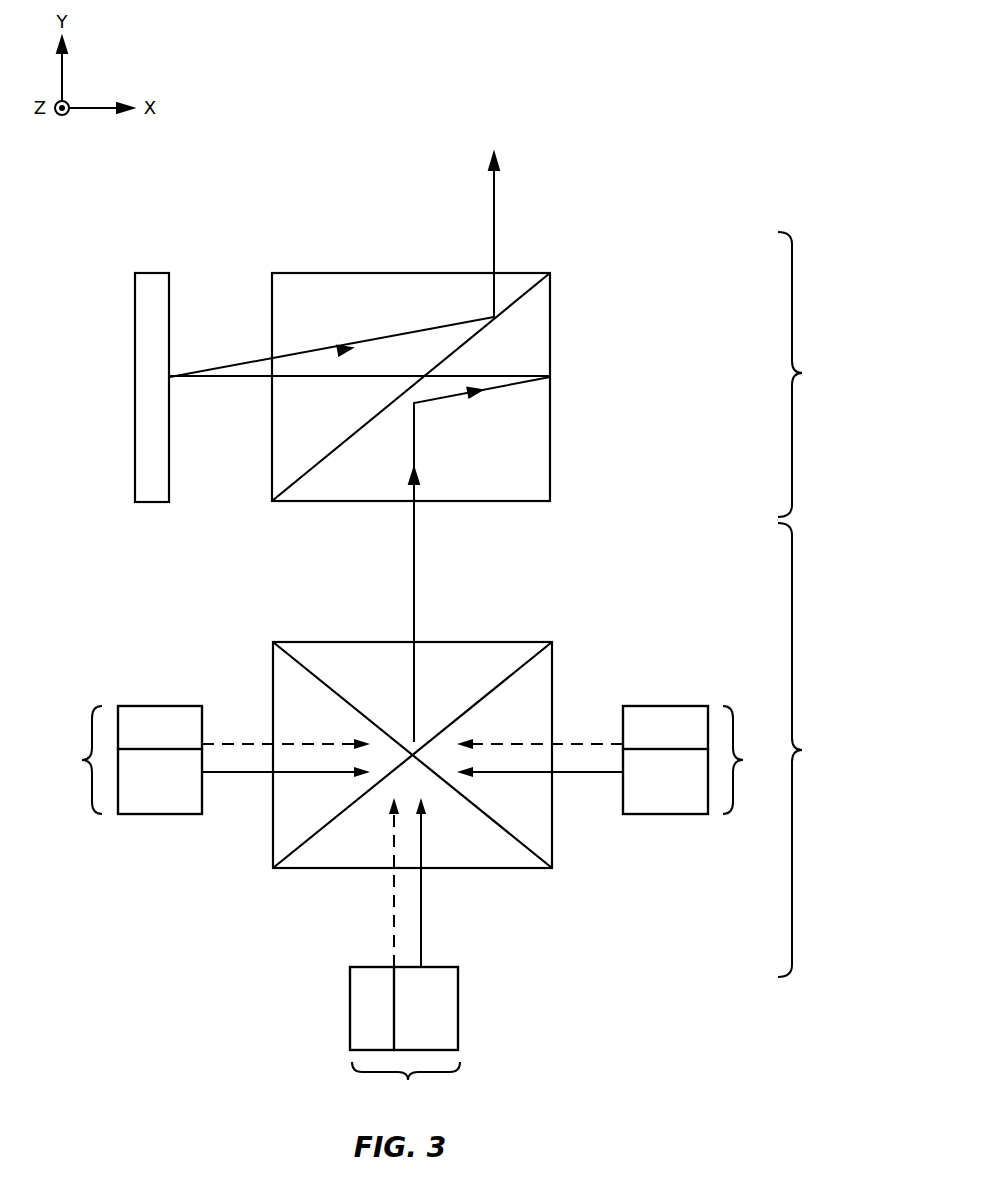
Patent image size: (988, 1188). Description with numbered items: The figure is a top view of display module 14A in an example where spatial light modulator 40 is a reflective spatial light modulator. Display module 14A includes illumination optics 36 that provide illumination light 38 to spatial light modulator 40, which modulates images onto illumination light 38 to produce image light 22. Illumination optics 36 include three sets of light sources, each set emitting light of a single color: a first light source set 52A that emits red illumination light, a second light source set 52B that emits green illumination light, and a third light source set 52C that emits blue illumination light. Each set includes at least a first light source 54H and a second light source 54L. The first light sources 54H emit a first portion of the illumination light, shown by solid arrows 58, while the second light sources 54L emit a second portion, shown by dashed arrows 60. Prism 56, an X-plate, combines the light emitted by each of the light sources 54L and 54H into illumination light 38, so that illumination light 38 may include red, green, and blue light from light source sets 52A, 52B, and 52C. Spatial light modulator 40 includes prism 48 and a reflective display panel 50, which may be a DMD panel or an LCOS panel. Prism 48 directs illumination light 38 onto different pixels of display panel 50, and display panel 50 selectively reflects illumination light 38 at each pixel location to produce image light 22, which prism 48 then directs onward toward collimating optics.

The display module 14A is at (677, 100).
The image light 22 is at (494, 214).
The illumination optics 36 is at (804, 750).
The illumination light 38 is at (414, 555).
The spatial light modulator 40 is at (804, 374).
The prism 48 is at (550, 325).
The display panel 50 is at (140, 395).
The first light source set 52A is at (121, 760).
The second light source set 52B is at (405, 1040).
The third light source set 52C is at (703, 760).
The second light source 54L is at (413, 851).
The first light source 54H is at (413, 899).
The prism 56 is at (553, 852).
The arrows 58 is at (412, 867).
The dashed arrows 60 is at (412, 826).